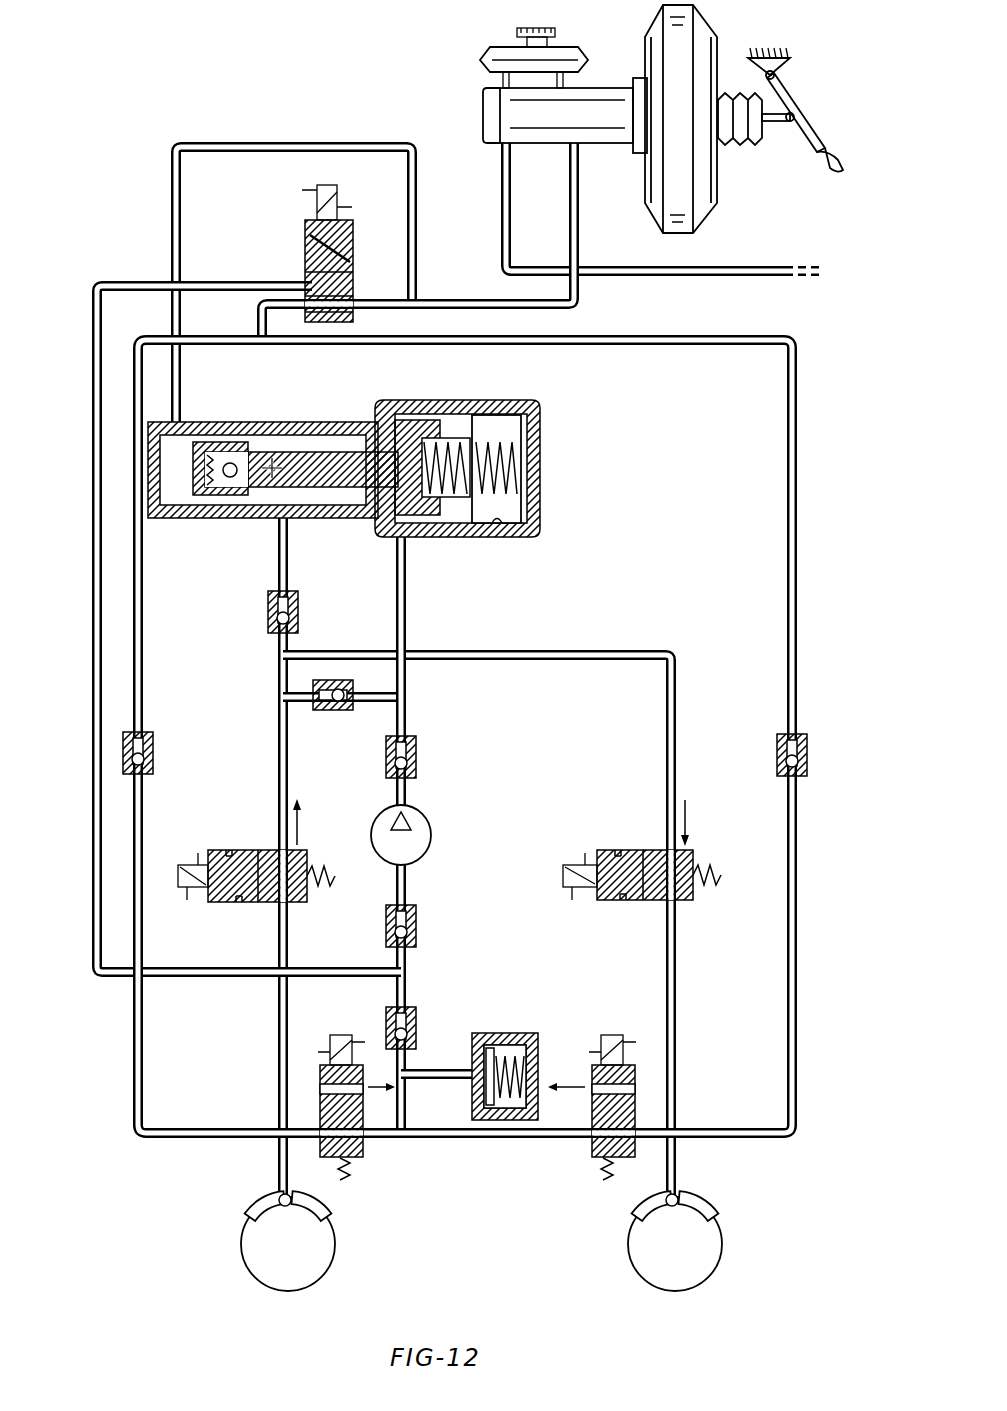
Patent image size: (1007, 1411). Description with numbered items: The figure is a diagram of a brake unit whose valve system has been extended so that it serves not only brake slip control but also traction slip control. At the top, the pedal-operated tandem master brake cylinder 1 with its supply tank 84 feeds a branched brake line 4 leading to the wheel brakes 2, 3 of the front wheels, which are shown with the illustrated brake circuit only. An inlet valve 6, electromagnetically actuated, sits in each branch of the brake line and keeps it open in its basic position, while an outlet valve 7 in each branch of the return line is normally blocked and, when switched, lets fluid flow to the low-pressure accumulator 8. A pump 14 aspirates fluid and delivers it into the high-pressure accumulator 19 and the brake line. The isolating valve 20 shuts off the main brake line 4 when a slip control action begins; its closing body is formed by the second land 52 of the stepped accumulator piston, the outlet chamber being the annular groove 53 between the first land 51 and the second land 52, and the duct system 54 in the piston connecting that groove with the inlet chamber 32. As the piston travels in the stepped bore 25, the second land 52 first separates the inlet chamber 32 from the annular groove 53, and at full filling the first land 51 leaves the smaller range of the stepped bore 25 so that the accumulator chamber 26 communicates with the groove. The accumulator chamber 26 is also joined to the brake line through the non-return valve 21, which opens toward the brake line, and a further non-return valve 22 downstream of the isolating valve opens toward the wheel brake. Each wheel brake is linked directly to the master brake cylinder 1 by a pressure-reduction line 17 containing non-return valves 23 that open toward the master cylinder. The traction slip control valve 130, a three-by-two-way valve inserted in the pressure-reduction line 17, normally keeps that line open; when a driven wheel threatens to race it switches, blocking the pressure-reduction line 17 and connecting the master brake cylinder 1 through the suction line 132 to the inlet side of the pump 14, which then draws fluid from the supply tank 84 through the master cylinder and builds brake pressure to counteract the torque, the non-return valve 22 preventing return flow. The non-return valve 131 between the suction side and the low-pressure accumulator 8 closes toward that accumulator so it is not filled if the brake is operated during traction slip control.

The tandem master brake cylinder 1 is at (500, 112).
The supply tank 84 is at (488, 50).
The brake line 4 is at (447, 298).
The traction slip control valve 130 is at (355, 242).
The pressure-reduction line 17 is at (787, 384).
The suction line 132 is at (93, 914).
The isolating valve 20 is at (240, 522).
The inlet chamber 32 is at (178, 493).
The second land 52 is at (229, 445).
The duct system 54 is at (256, 443).
The annular groove 53 is at (297, 440).
The first land 51 is at (343, 422).
The high-pressure accumulator 19 is at (552, 430).
The accumulator chamber 26 is at (383, 498).
The stepped bore 25 is at (491, 523).
The non-return valve 22 is at (268, 612).
The non-return valve 21 is at (343, 712).
The non-return valves 23 is at (152, 757).
The pump 14 is at (432, 838).
The inlet valve 6 is at (247, 903).
The non-return valve 131 is at (418, 1025).
The low-pressure accumulator 8 is at (512, 1040).
The outlet valve 7 is at (364, 1154).
The front wheel brake 2 is at (322, 1256).
The front wheel brake 3 is at (645, 1250).